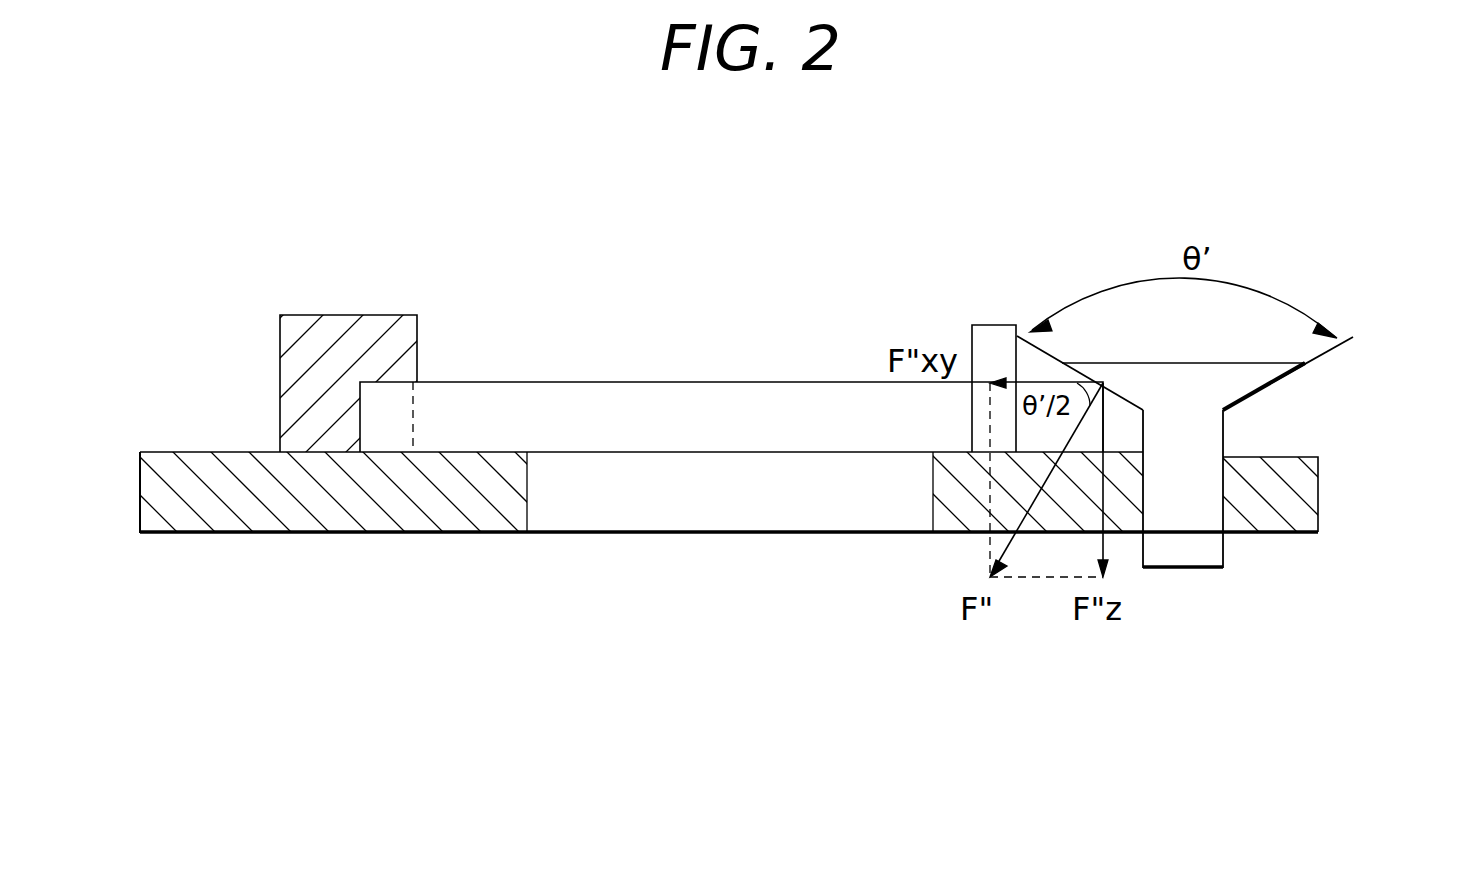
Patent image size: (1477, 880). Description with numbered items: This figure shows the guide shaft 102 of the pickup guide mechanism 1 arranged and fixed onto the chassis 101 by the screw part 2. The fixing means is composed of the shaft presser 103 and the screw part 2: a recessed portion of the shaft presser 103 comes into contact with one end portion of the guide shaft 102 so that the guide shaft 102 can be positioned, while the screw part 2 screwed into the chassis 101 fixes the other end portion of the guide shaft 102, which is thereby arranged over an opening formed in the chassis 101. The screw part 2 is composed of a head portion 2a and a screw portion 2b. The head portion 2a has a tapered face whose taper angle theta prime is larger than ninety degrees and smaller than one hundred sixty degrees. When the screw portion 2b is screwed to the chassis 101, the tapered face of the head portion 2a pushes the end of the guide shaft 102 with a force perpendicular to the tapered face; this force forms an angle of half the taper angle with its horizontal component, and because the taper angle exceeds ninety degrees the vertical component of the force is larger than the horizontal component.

The pickup guide mechanism 1 is at (808, 210).
The chassis 101 is at (323, 508).
The guide shaft 102 is at (690, 413).
The shaft presser 103 is at (330, 333).
The screw part 2 is at (1425, 363).
The head portion 2a is at (1260, 375).
The screw portion 2b is at (1210, 433).